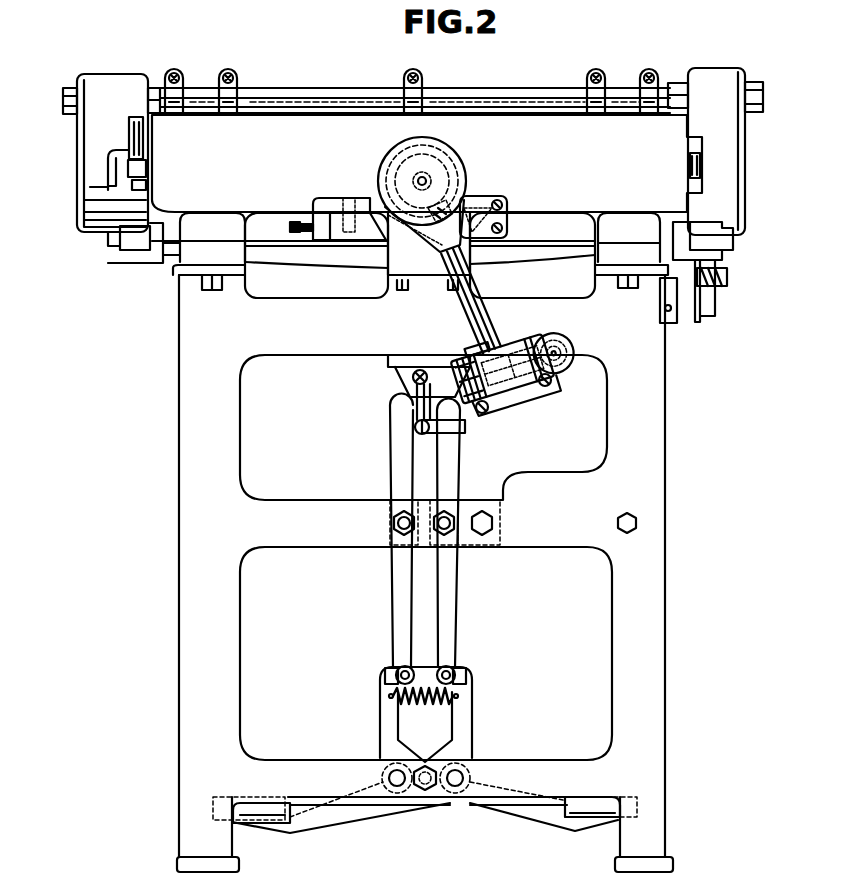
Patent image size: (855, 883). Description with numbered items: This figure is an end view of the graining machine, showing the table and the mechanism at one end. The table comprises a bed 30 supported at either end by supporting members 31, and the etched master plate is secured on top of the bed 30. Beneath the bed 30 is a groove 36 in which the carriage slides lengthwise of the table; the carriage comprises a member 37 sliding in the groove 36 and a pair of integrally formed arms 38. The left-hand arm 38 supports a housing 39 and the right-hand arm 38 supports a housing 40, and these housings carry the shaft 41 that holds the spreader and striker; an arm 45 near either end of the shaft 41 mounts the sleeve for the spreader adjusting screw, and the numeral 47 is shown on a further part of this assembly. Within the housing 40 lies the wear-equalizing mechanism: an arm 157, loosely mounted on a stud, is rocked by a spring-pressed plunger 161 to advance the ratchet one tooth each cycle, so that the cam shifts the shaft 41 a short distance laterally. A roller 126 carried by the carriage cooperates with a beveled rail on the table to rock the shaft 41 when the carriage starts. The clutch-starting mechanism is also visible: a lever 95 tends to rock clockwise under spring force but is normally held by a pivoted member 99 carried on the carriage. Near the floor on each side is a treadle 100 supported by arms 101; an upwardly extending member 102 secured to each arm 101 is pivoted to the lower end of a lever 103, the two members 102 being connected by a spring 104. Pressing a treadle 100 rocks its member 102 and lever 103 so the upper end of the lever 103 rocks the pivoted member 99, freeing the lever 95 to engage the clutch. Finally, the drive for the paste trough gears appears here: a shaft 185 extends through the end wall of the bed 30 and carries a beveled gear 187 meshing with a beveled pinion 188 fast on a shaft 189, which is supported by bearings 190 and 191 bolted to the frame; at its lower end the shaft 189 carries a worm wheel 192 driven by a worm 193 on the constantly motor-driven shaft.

The bed 30 is at (568, 203).
The supporting members 31 is at (655, 434).
The groove 36 is at (516, 222).
The carriage member 37 is at (368, 198).
The arms 38 is at (320, 262).
The housing 39 is at (92, 142).
The housing 40 is at (735, 158).
The shaft 41 is at (452, 104).
The arm 45 is at (181, 92).
The intermediate clips 47 is at (236, 94).
The lever 95 is at (425, 440).
The pivoted member 99 is at (410, 380).
The treadle 100 is at (592, 820).
The arms 101 is at (515, 808).
The upwardly extending member 102 is at (380, 723).
The lever 103 is at (398, 610).
The spring 104 is at (415, 705).
The roller 126 is at (690, 165).
The arm 157 is at (146, 168).
The spring-pressed plunger 161 is at (143, 158).
The shaft 185 is at (428, 178).
The beveled gear 187 is at (440, 152).
The beveled pinion 188 is at (455, 207).
The shaft 189 is at (472, 312).
The bearing 190 is at (440, 248).
The bearing 191 is at (490, 340).
The worm wheel 192 is at (528, 388).
The worm 193 is at (568, 342).